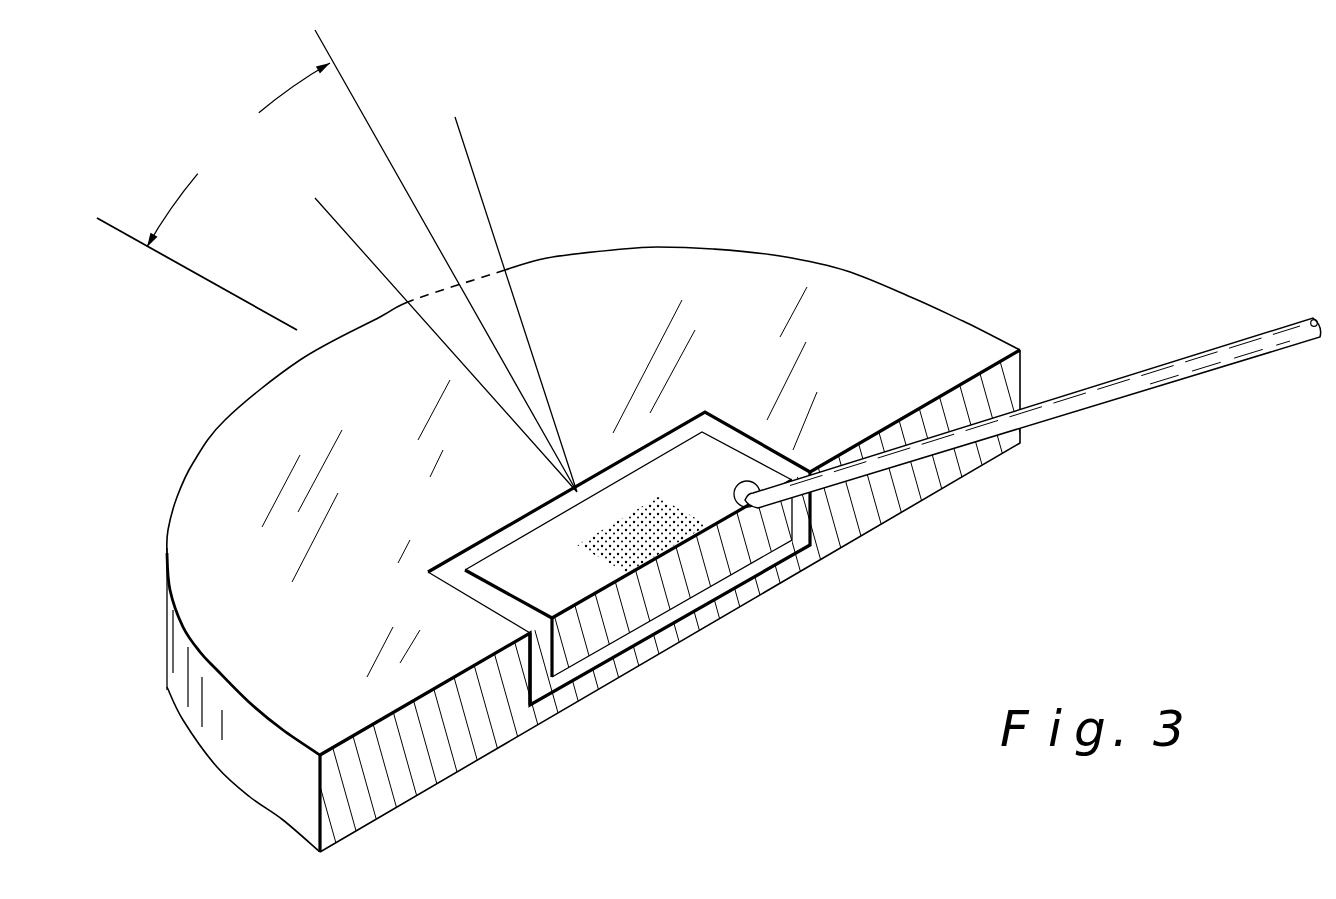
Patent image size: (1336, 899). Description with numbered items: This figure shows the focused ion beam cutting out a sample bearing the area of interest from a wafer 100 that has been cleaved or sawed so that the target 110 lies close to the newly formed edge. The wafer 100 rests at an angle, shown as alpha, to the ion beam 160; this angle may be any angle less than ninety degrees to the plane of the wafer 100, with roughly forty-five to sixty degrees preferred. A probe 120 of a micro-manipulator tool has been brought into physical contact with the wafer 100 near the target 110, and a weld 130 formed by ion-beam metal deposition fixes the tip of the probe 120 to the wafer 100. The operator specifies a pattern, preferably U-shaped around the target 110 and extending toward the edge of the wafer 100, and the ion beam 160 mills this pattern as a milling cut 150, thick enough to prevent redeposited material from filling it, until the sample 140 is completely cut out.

The wafer 100 is at (967, 321).
The target 110 is at (670, 541).
The probe 120 is at (1101, 397).
The weld 130 is at (738, 480).
The sample 140 is at (673, 607).
The milling cut 150 is at (541, 686).
The ion beam 160 is at (488, 212).